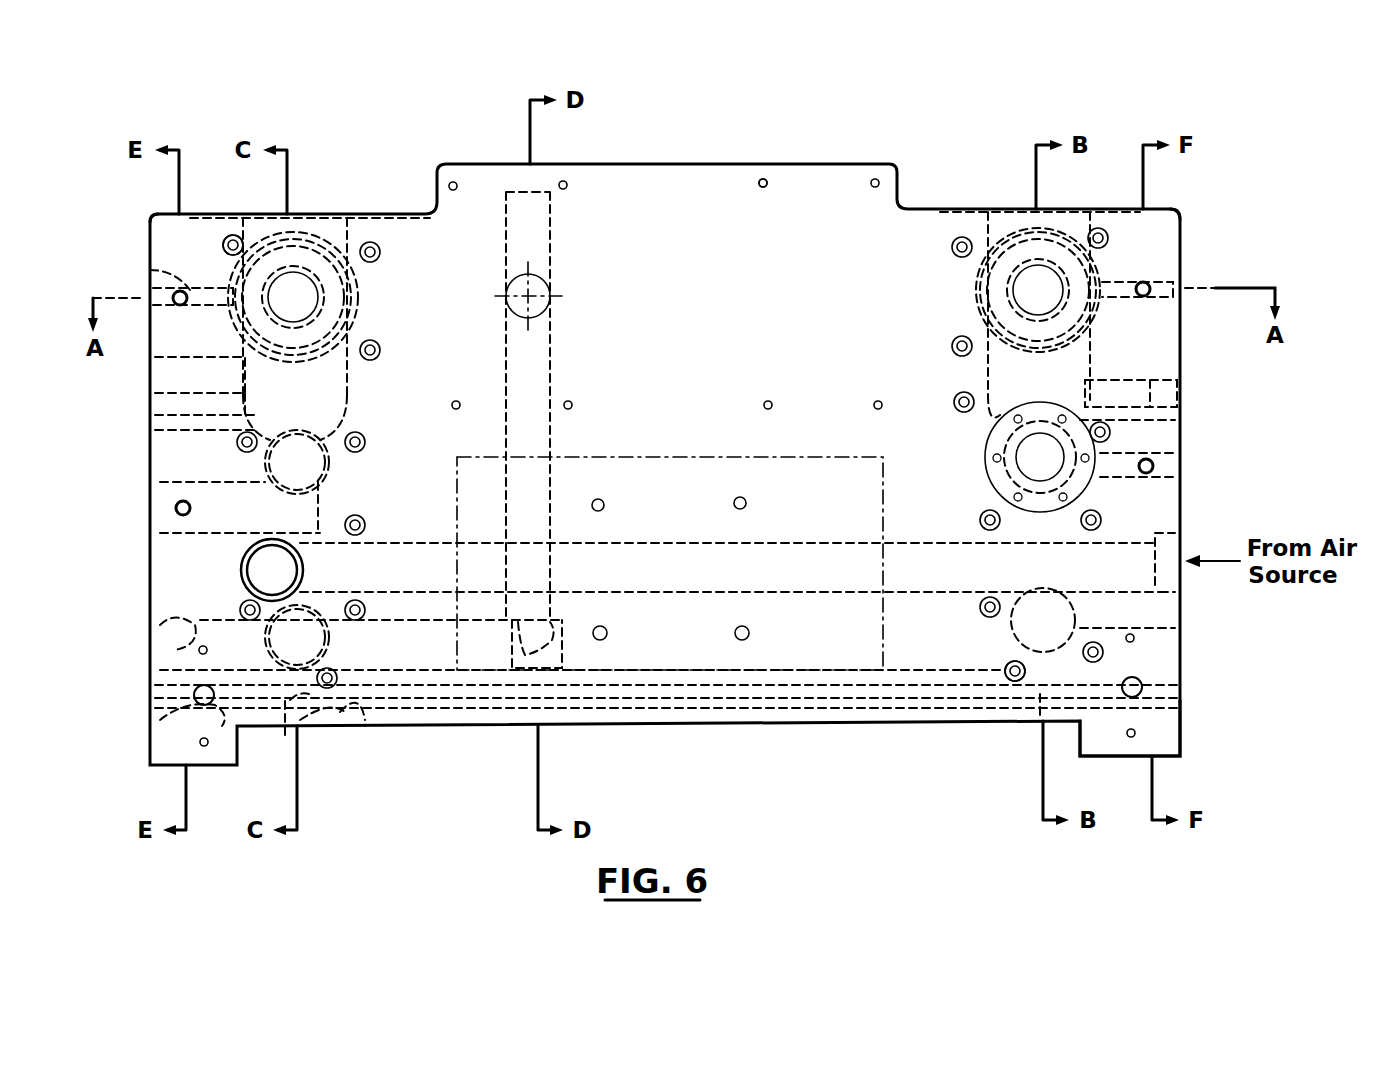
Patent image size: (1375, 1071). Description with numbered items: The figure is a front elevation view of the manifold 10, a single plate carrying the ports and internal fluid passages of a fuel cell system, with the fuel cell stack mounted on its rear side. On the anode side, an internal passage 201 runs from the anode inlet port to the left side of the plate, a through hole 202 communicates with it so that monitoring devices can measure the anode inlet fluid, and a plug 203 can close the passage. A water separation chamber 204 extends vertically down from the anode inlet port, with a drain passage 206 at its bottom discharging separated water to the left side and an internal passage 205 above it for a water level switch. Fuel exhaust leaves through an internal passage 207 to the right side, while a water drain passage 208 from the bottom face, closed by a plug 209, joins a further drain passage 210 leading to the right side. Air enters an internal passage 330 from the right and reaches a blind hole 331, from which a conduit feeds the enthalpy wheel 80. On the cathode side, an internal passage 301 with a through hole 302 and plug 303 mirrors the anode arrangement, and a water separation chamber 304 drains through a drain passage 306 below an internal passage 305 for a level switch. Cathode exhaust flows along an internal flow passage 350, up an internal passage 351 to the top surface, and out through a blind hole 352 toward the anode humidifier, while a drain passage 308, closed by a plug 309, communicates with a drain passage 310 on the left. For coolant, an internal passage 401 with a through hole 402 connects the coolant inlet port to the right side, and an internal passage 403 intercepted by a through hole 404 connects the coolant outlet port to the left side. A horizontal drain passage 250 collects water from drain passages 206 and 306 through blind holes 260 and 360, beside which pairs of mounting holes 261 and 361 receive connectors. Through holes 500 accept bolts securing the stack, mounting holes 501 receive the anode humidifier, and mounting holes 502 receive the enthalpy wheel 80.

The manifold 10 is at (760, 58).
The enthalpy wheel 80 is at (885, 490).
The internal passage 201 is at (150, 218).
The through hole 202 is at (148, 268).
The plug 203 is at (173, 295).
The water separation chamber 204 is at (332, 214).
The internal passage 205 is at (188, 375).
The internal drain passage 206 is at (150, 425).
The internal passage 207 is at (1180, 597).
The internal water drain passage 208 is at (1005, 700).
The plug 209 is at (1040, 715).
The internal water drain passage 210 is at (1183, 720).
The internal water drain passage 250 is at (618, 695).
The blind hole 260 is at (195, 692).
The mounting holes 261 is at (199, 648).
The internal passage 301 is at (1177, 246).
The through hole 302 is at (1149, 292).
The plug 303 is at (1178, 284).
The water separation chamber 304 is at (1012, 214).
The internal passage 305 is at (1178, 376).
The internal drain passage 306 is at (1180, 418).
The internal water drain passage 308 is at (345, 715).
The plug 309 is at (285, 735).
The internal water drain passage 310 is at (165, 720).
The internal passage 330 is at (915, 585).
The blind hole 331 is at (179, 570).
The internal flow passage 350 is at (165, 620).
The internal passage 351 is at (523, 213).
The blind hole 352 is at (515, 282).
The blind hole 360 is at (1142, 685).
The mounting holes 361 is at (1136, 639).
The internal passage 401 is at (1075, 425).
The through hole 402 is at (1153, 466).
The internal passage 403 is at (150, 518).
The through hole 404 is at (176, 508).
The through holes 500 is at (235, 238).
The mounting holes 501 is at (767, 180).
The mounting holes 502 is at (746, 503).